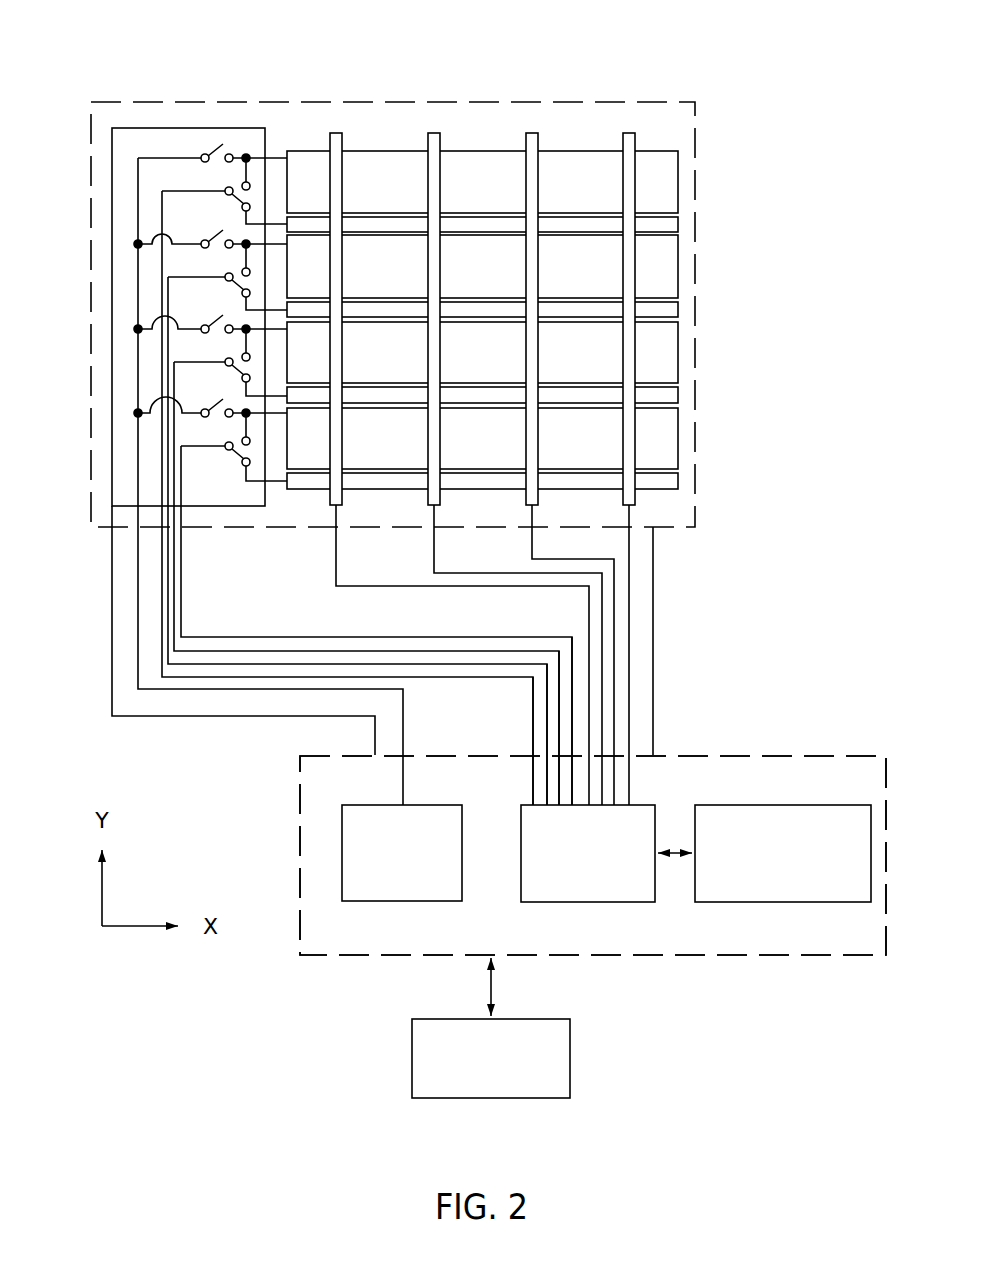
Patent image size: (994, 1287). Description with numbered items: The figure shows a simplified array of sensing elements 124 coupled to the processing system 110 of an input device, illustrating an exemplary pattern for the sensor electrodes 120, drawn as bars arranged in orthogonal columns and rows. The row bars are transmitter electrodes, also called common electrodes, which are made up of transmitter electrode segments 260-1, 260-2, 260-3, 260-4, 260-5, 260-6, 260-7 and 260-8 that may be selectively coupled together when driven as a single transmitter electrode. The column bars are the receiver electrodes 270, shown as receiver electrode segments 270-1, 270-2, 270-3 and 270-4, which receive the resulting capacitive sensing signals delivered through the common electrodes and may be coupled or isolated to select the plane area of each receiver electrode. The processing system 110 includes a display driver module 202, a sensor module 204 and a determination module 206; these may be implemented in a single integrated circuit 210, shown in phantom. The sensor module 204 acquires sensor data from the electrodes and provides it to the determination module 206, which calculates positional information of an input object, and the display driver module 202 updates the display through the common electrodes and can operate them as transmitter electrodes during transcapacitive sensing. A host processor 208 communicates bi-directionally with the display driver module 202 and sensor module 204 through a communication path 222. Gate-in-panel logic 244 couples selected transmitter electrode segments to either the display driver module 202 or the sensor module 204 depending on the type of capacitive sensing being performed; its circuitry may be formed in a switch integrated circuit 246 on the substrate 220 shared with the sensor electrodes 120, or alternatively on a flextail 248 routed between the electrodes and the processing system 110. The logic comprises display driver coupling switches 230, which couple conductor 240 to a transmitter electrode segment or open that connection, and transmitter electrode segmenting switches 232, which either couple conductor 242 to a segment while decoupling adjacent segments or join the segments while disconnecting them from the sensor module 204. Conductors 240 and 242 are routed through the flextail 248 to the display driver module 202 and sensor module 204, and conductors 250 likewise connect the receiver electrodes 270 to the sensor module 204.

The processing system 110 is at (715, 726).
The sensor electrodes 120 is at (549, 261).
The array of sensing elements 124 is at (549, 259).
The display driver module 202 is at (424, 901).
The sensor module 204 is at (608, 902).
The determination module 206 is at (732, 902).
The host processor 208 is at (545, 1017).
The integrated circuit 210 is at (300, 775).
The substrate 220 is at (146, 100).
The communication path 222 is at (490, 980).
The display driver coupling switch 230 is at (206, 148).
The transmitter electrode segmenting switch 232 is at (226, 200).
The conductor 240 is at (140, 590).
The conductor 242 is at (452, 677).
The gate-in-panel logic 244 is at (217, 480).
The switch integrated circuit 246 is at (111, 180).
The flextail 248 is at (112, 682).
The conductors 250 is at (628, 628).
The transmitter electrode segment 260-1 is at (661, 182).
The transmitter electrode segment 260-2 is at (661, 225).
The transmitter electrode segment 260-3 is at (661, 263).
The transmitter electrode segment 260-4 is at (661, 310).
The transmitter electrode segment 260-5 is at (661, 351).
The transmitter electrode segment 260-6 is at (661, 396).
The transmitter electrode segment 260-7 is at (661, 434).
The transmitter electrode segment 260-8 is at (661, 483).
The receiver electrodes 270 is at (498, 261).
The receiver electrode segment 270-1 is at (336, 133).
The receiver electrode segment 270-2 is at (434, 133).
The receiver electrode segment 270-3 is at (532, 133).
The receiver electrode segment 270-4 is at (629, 133).